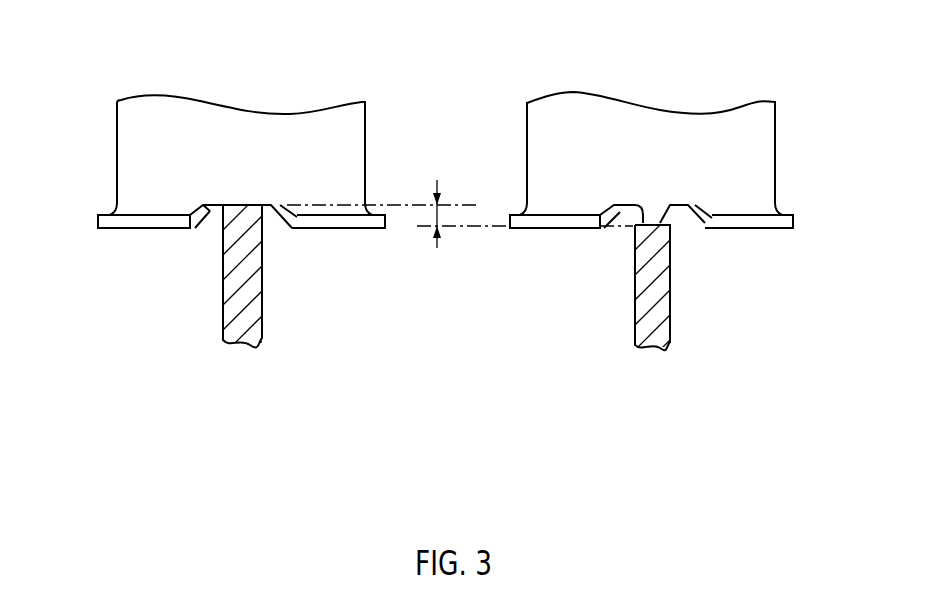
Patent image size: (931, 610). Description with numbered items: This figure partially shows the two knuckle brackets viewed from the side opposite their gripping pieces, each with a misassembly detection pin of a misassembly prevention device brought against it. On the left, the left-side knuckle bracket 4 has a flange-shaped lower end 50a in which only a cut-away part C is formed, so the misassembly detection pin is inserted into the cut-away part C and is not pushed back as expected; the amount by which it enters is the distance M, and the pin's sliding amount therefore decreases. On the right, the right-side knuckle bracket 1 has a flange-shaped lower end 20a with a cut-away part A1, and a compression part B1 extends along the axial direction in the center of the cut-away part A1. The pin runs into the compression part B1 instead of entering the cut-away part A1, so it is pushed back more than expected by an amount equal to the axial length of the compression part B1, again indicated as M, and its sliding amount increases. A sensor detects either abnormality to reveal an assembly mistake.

The right-side knuckle bracket 1 is at (793, 126).
The left-side knuckle bracket 4 is at (106, 122).
The lower end 20a is at (762, 227).
The lower end 50a is at (130, 228).
The cut-away part C is at (200, 212).
The cut-away part A1 is at (612, 203).
The compression part B1 is at (667, 205).
The amount M is at (432, 215).